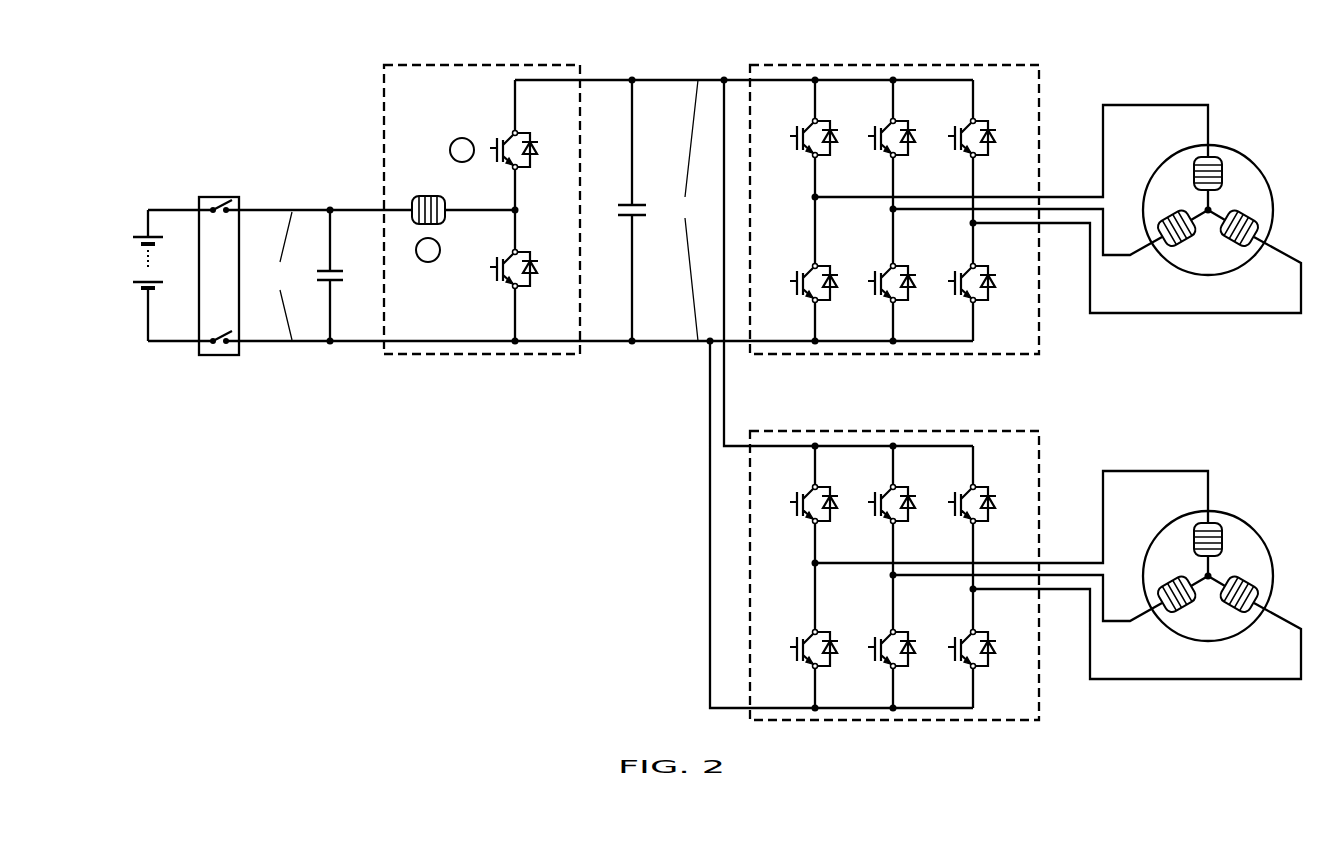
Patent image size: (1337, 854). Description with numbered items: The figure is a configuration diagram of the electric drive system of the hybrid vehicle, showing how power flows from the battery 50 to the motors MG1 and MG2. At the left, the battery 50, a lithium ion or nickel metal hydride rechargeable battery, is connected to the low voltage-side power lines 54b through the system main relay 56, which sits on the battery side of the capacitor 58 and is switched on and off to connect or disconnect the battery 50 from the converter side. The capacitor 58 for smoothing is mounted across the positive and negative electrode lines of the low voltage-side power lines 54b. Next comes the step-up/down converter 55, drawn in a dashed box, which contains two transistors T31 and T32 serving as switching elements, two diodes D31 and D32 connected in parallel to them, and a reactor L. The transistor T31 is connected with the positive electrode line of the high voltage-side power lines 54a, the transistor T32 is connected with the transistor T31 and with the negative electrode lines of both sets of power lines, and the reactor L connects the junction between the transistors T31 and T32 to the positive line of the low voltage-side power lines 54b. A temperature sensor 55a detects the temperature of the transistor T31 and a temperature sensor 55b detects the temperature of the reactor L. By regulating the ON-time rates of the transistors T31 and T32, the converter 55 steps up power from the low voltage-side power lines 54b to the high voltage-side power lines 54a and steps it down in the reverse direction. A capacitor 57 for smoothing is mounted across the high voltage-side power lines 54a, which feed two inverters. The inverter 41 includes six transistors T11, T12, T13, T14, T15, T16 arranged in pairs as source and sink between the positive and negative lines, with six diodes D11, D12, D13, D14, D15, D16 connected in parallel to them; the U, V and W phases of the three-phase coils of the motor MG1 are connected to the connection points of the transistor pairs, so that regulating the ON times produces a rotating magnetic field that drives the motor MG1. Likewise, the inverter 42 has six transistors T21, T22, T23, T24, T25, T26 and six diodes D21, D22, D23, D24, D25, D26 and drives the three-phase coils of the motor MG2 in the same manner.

The battery 50 is at (145, 232).
The system main relay 56 is at (219, 196).
The low voltage-side power lines 54b is at (275, 276).
The capacitor 58 is at (340, 271).
The step-up/down converter 55 is at (475, 63).
The temperature sensor 55a is at (451, 143).
The temperature sensor 55b is at (429, 263).
The reactor L is at (427, 194).
The transistor T31 is at (492, 145).
The diode D31 is at (538, 159).
The transistor T32 is at (492, 264).
The diode D32 is at (538, 278).
The capacitor 57 is at (641, 204).
The high voltage-side power lines 54a is at (680, 210).
The inverter 41 is at (893, 63).
The transistor T11 is at (792, 133).
The transistor T12 is at (870, 133).
The transistor T13 is at (950, 133).
The transistor T14 is at (792, 278).
The transistor T15 is at (870, 278).
The transistor T16 is at (950, 278).
The diode D11 is at (838, 147).
The diode D12 is at (916, 147).
The diode D13 is at (996, 147).
The diode D14 is at (838, 292).
The diode D15 is at (916, 292).
The diode D16 is at (996, 292).
The inverter 42 is at (893, 430).
The transistor T21 is at (792, 499).
The transistor T22 is at (870, 499).
The transistor T23 is at (950, 499).
The transistor T24 is at (792, 644).
The transistor T25 is at (870, 644).
The transistor T26 is at (950, 644).
The diode D21 is at (838, 513).
The diode D22 is at (916, 513).
The diode D23 is at (996, 513).
The diode D24 is at (838, 658).
The diode D25 is at (916, 658).
The diode D26 is at (996, 658).
The motor MG1 is at (1240, 147).
The motor MG2 is at (1240, 513).
The U phase U is at (1195, 316).
The V phase V is at (1128, 421).
The W phase W is at (1286, 421).